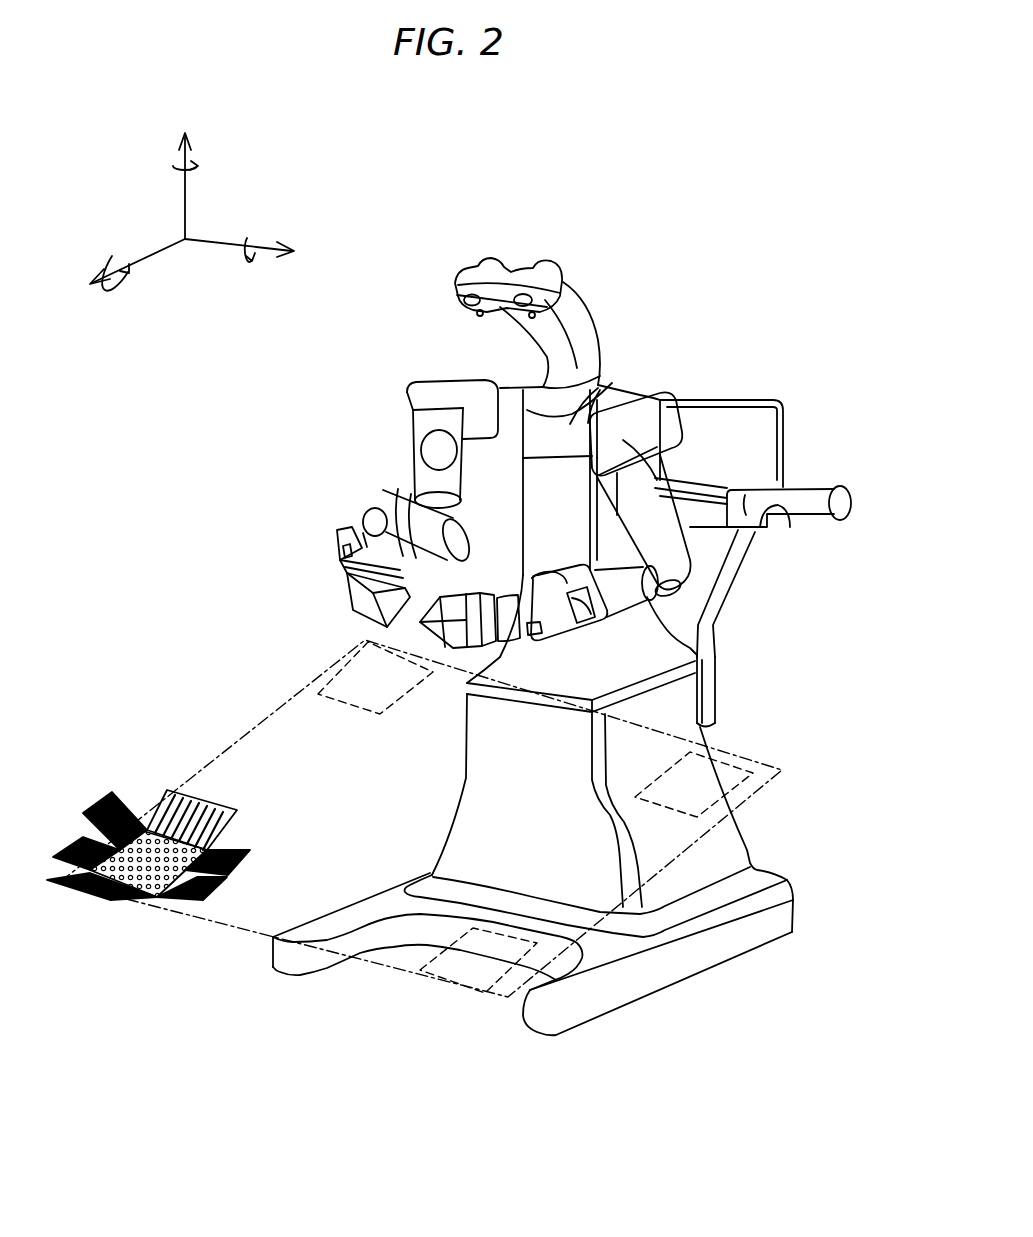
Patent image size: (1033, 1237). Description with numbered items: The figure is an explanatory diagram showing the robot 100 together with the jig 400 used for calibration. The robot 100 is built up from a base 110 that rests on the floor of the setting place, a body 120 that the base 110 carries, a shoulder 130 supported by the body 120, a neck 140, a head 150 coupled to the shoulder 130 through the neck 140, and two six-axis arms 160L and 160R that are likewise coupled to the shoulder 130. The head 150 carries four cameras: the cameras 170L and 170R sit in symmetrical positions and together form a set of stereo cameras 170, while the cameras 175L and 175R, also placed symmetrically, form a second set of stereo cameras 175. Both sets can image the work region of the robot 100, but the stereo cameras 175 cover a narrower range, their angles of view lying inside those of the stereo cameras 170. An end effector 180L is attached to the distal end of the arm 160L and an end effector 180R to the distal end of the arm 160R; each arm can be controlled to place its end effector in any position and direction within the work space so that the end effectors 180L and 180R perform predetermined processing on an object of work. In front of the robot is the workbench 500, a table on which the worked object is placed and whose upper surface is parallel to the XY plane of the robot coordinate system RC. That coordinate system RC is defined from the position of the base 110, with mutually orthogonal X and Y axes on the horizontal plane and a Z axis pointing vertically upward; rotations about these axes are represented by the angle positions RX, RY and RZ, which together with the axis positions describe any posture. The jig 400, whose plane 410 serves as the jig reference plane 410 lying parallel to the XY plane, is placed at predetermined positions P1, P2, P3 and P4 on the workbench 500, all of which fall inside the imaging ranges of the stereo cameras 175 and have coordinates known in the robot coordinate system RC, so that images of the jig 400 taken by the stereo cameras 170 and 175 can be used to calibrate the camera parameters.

The robot 100 is at (736, 265).
The base 110 is at (453, 840).
The body 120 is at (537, 483).
The shoulder 130 is at (596, 397).
The neck 140 is at (589, 343).
The head 150 is at (486, 266).
The arm 160L is at (698, 590).
The arm 160R is at (366, 484).
The stereo cameras 170 is at (507, 304).
The camera 170L is at (561, 297).
The camera 170R is at (461, 308).
The stereo cameras 175 is at (564, 331).
The camera 175L is at (581, 321).
The camera 175R is at (480, 318).
The end effector 180L is at (452, 673).
The end effector 180R is at (352, 607).
The jig 400 is at (230, 848).
The jig reference plane 410 is at (143, 816).
The workbench 500 is at (278, 705).
The position P1 is at (157, 907).
The position P2 is at (440, 970).
The position P3 is at (727, 767).
The position P4 is at (336, 662).
The robot coordinate system RC is at (244, 146).
The angle position RX is at (112, 258).
The angle position RY is at (248, 238).
The angle position RZ is at (173, 170).